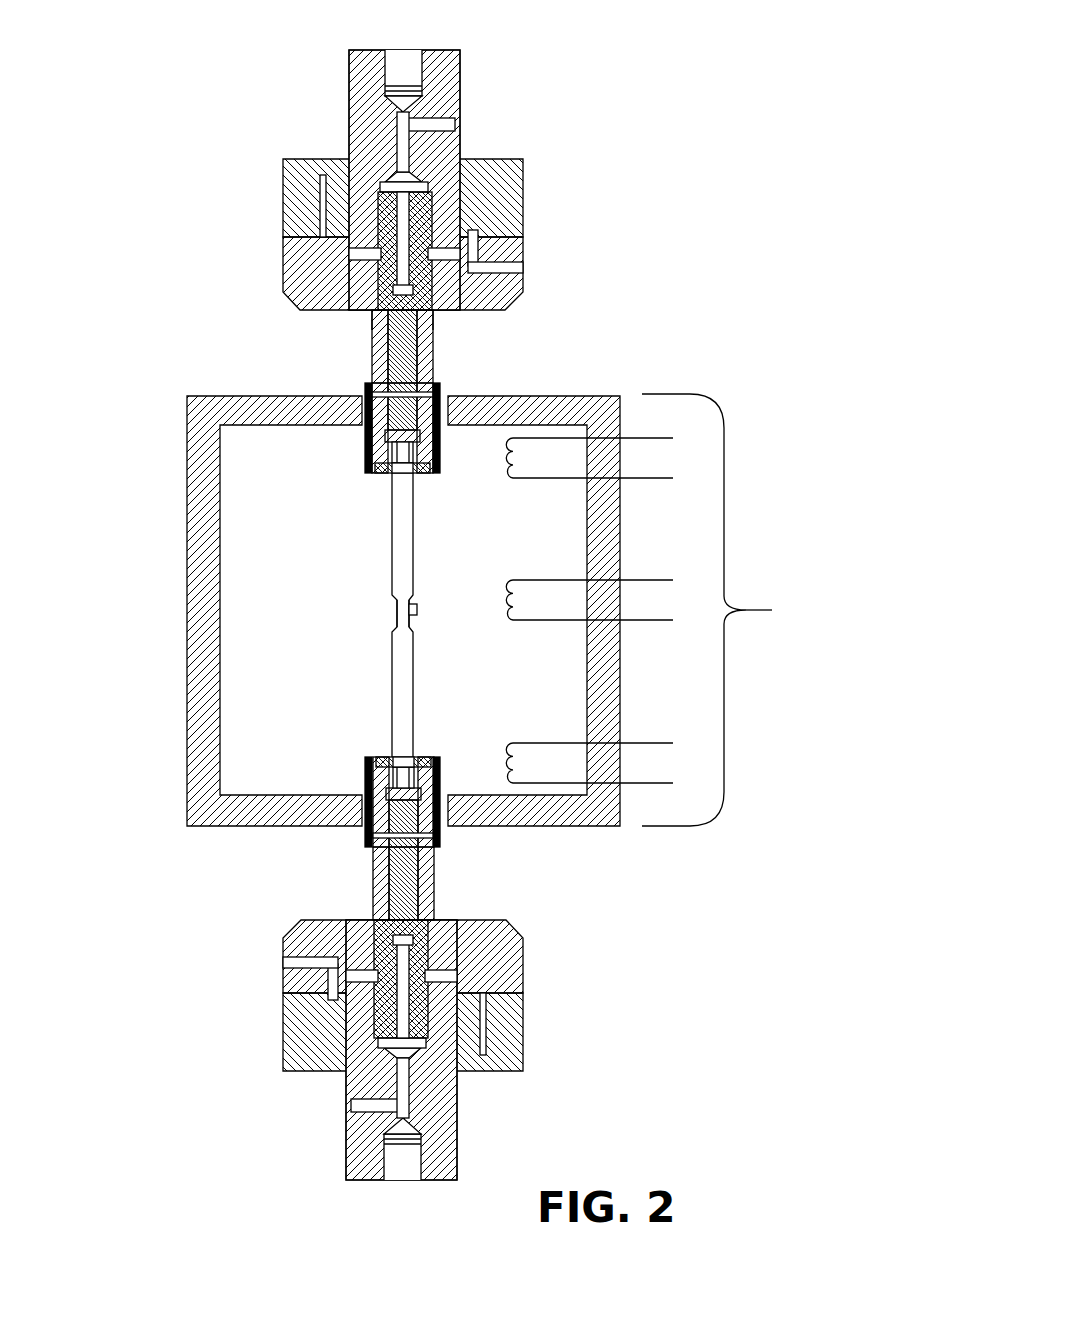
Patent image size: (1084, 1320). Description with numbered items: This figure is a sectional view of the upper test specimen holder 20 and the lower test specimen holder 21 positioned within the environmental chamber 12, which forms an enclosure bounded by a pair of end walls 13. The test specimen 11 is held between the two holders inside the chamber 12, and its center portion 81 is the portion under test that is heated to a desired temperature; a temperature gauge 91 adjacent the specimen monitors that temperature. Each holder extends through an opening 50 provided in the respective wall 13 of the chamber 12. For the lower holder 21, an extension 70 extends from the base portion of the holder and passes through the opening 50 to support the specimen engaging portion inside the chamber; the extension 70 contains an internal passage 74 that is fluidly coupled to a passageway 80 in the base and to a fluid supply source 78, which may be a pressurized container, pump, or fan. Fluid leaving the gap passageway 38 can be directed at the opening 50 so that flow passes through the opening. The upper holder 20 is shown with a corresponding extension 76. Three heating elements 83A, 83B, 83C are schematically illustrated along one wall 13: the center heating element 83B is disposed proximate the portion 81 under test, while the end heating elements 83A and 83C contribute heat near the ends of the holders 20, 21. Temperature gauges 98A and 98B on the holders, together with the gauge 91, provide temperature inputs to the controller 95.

The test specimen 11 is at (414, 541).
The environmental chamber 12 is at (369, 611).
The end walls 13 is at (520, 396).
The test specimen holder 20 is at (538, 84).
The test specimen holder 21 is at (625, 1002).
The gap passageway 38 is at (368, 455).
The opening 50 is at (363, 394).
The extension 70 is at (372, 350).
The internal passage 74 is at (358, 323).
The tube 76 is at (372, 875).
The fluid supply source 78 is at (450, 136).
The passageway 80 is at (393, 142).
The center portion 81 is at (392, 612).
The end heating element 83A is at (517, 738).
The center heating element 83B is at (517, 630).
The end heating element 83C is at (507, 488).
The temperature gauge 91 is at (418, 608).
The controller 95 is at (777, 610).
The temperature gauge 98A is at (440, 832).
The temperature gauge 98B is at (441, 385).